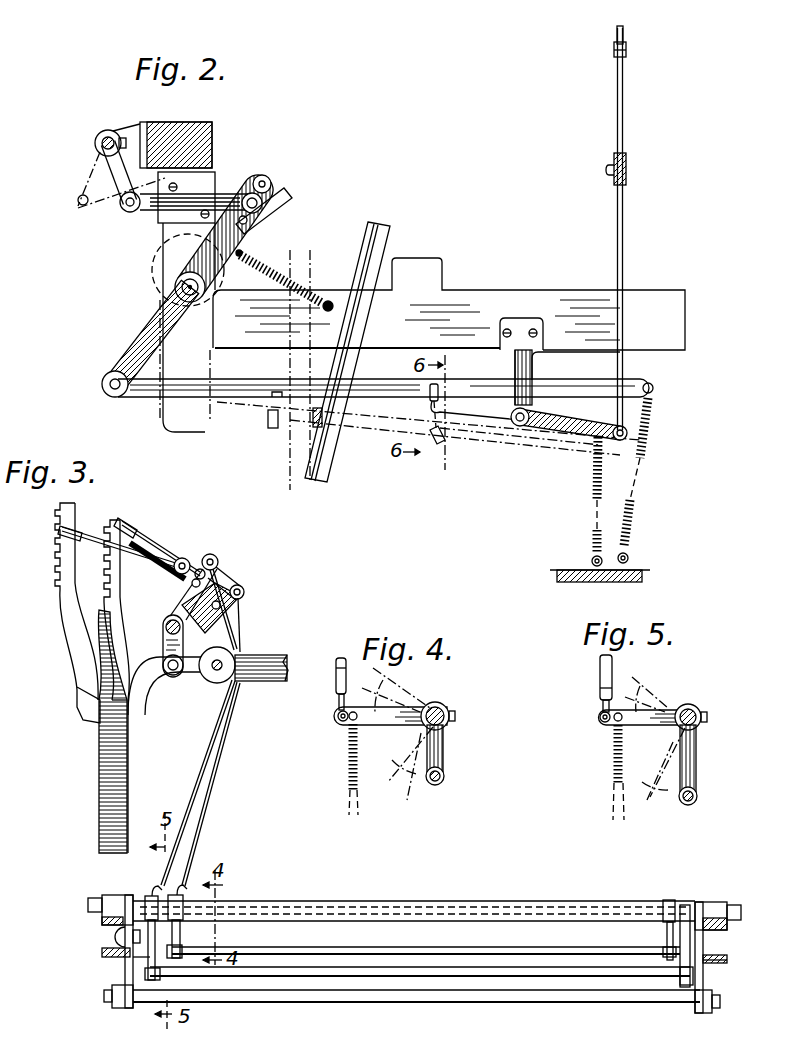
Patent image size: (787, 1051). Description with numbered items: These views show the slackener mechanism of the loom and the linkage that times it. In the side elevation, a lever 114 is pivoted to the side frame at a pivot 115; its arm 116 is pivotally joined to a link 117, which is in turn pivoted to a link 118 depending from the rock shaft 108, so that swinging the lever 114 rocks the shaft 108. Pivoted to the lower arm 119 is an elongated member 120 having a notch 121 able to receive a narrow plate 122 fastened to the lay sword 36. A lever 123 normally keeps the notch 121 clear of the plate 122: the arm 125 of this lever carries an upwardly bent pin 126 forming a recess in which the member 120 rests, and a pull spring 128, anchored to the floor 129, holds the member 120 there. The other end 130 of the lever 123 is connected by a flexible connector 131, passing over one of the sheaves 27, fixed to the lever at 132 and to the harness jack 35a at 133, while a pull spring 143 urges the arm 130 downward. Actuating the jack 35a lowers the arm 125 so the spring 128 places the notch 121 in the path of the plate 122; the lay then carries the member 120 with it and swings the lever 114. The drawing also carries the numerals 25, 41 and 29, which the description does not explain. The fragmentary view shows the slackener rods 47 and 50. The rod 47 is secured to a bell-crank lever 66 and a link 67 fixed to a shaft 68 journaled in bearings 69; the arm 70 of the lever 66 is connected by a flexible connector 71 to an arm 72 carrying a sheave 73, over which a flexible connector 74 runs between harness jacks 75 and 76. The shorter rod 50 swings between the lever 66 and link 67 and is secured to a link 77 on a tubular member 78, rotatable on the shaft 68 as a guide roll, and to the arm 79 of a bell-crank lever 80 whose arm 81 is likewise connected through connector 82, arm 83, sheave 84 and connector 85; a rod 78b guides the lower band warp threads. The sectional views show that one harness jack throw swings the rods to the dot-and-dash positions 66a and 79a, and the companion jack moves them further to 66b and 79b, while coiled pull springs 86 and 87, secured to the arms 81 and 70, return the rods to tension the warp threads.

In FIG. 2, the harness jack 35a is at (625, 34).
In FIG. 2, the connector end fixing point 133 is at (627, 51).
In FIG. 2, the sheave 27 is at (628, 157).
In FIG. 2, the pin 29 is at (628, 170).
In FIG. 2, the flexible connector 131 is at (624, 260).
In FIG. 2, the frame 25 is at (488, 300).
In FIG. 2, the block 41 is at (213, 125).
In FIG. 2, the rock shaft 108 is at (100, 146).
In FIG. 2, the link 117 is at (222, 178).
In FIG. 2, the link 118 is at (128, 206).
In FIG. 2, the arm of lever 116 is at (165, 251).
In FIG. 2, the pivot 115 is at (175, 287).
In FIG. 2, the lever 114 is at (160, 302).
In FIG. 2, the arm of lever 119 is at (122, 374).
In FIG. 2, the elongated member 120 is at (385, 377).
In FIG. 2, the notch 121 is at (278, 391).
In FIG. 2, the narrow plate 122 is at (270, 416).
In FIG. 2, the pin 126 is at (440, 389).
In FIG. 2, the lay sword 36 is at (326, 462).
In FIG. 2, the arm of lever 125 is at (464, 414).
In FIG. 2, the lever 123 is at (520, 430).
In FIG. 2, the end of lever 130 is at (573, 434).
In FIG. 2, the connector fixing point 132 is at (616, 428).
In FIG. 2, the pull spring 128 is at (648, 462).
In FIG. 2, the pull spring 143 is at (594, 482).
In FIG. 2, the floor 129 is at (632, 574).
In FIG. 3, the harness jack 76 is at (62, 510).
In FIG. 3, the flexible connector 74 is at (98, 540).
In FIG. 3, the harness jack 75 is at (124, 524).
In FIG. 3, the sheave 73 is at (186, 559).
In FIG. 3, the arm 72 is at (217, 560).
In FIG. 3, the sheave 84 is at (232, 586).
In FIG. 3, the arm 83 is at (245, 592).
In FIG. 3, the connector 85 is at (150, 572).
In FIG. 3, the flexible connector 71 is at (198, 780).
In FIG. 5, the flexible connector 71 is at (600, 683).
In FIG. 3, the connector 82 is at (216, 779).
In FIG. 4, the connector 82 is at (337, 686).
In FIG. 3, the bearings 69 is at (108, 895).
In FIG. 3, the shaft 68 is at (568, 901).
In FIG. 4, the shaft 68 is at (450, 727).
In FIG. 3, the tubular member 78 is at (620, 902).
In FIG. 3, the link 77 is at (672, 931).
In FIG. 3, the link 67 is at (696, 961).
In FIG. 3, the lever 66 is at (148, 958).
In FIG. 5, the lever 66 is at (697, 755).
In FIG. 3, the arm of lever 79 is at (176, 932).
In FIG. 4, the arm of lever 79 is at (445, 753).
In FIG. 3, the slackener rod 50 is at (342, 951).
In FIG. 4, the slackener rod 50 is at (433, 787).
In FIG. 3, the slackener rod 47 is at (323, 977).
In FIG. 5, the slackener rod 47 is at (683, 806).
In FIG. 3, the rod 78b is at (380, 1003).
In FIG. 4, the bell crank lever 80 is at (449, 707).
In FIG. 4, the arm of lever 81 is at (340, 723).
In FIG. 4, the coiled pull spring 86 is at (348, 769).
In FIG. 4, the dot and dash line position 79b is at (405, 760).
In FIG. 4, the dot and dash line position 79a is at (420, 790).
In FIG. 5, the arm of lever 70 is at (665, 710).
In FIG. 5, the dot and dash line position 66b is at (666, 765).
In FIG. 5, the dot and dash line position 66a is at (665, 805).
In FIG. 5, the coiled pull spring 87 is at (612, 765).